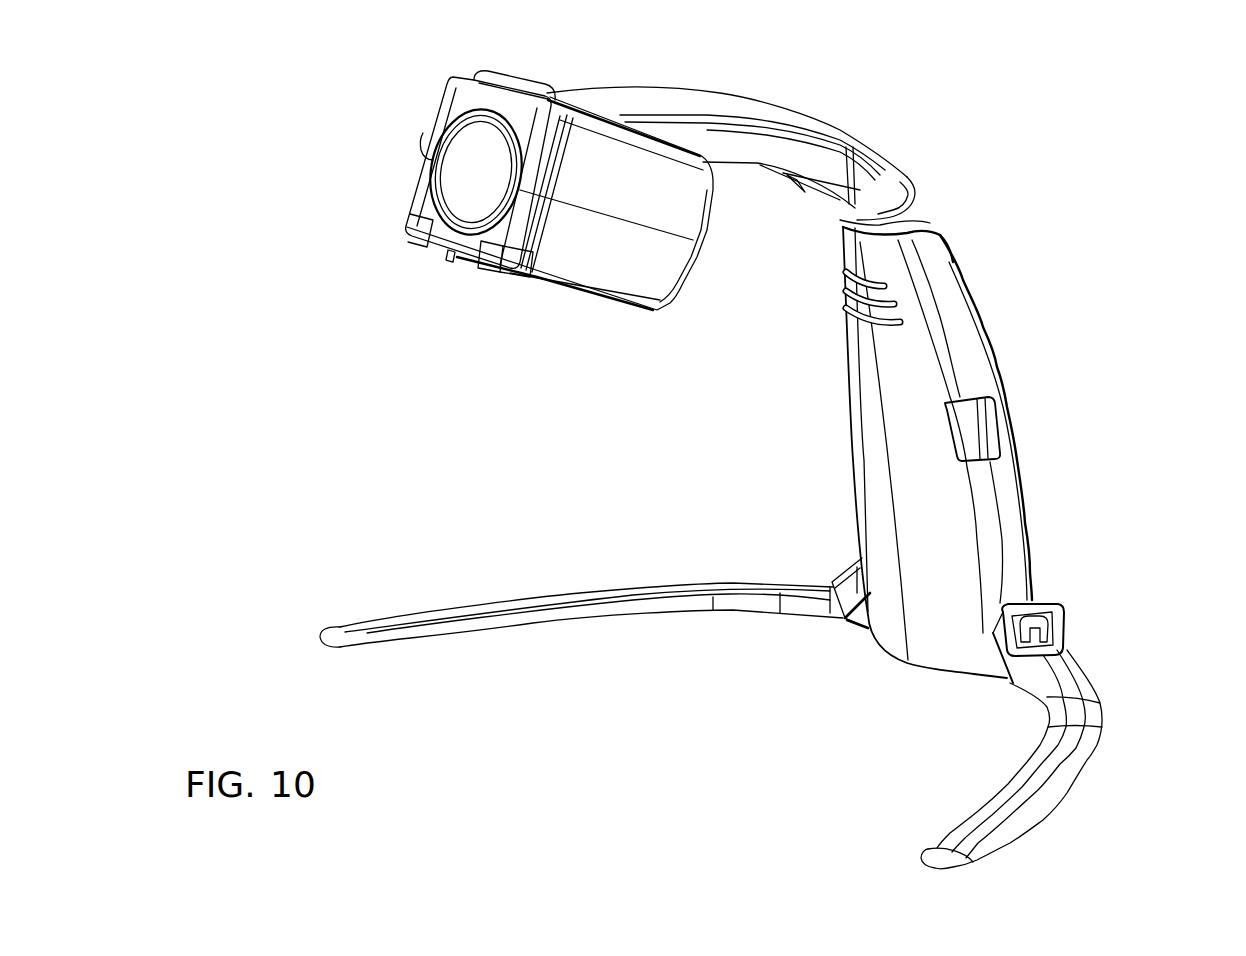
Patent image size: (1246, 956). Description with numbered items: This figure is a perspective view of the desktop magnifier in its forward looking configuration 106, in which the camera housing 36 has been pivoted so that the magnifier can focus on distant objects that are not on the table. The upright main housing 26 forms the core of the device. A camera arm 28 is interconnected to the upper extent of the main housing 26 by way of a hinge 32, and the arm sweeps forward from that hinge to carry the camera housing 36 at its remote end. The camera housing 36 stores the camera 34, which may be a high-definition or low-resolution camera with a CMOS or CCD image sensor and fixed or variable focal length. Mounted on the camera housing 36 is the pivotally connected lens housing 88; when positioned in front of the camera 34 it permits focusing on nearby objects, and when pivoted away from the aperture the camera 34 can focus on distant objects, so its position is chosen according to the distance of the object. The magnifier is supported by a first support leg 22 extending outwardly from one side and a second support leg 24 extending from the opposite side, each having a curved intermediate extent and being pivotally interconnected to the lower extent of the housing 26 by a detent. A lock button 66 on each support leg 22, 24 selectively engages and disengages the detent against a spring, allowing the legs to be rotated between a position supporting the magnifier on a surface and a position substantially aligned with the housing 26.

The forward looking configuration 106 is at (1059, 178).
The lens housing 88 is at (455, 101).
The camera 34 is at (474, 181).
The camera housing 36 is at (602, 263).
The camera arm 28 is at (712, 101).
The hinge 32 is at (913, 200).
The main housing 26 is at (983, 368).
The lock button 66 is at (853, 560).
The second support leg 24 is at (528, 612).
The first support leg 22 is at (1060, 776).